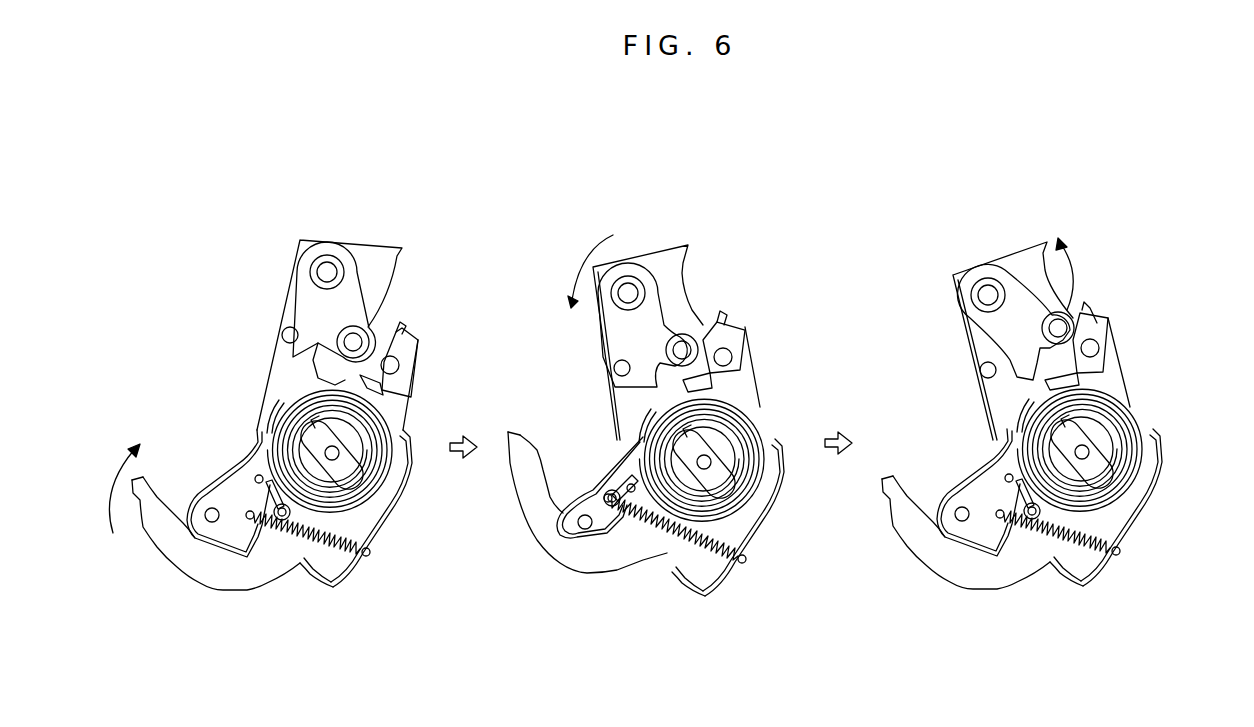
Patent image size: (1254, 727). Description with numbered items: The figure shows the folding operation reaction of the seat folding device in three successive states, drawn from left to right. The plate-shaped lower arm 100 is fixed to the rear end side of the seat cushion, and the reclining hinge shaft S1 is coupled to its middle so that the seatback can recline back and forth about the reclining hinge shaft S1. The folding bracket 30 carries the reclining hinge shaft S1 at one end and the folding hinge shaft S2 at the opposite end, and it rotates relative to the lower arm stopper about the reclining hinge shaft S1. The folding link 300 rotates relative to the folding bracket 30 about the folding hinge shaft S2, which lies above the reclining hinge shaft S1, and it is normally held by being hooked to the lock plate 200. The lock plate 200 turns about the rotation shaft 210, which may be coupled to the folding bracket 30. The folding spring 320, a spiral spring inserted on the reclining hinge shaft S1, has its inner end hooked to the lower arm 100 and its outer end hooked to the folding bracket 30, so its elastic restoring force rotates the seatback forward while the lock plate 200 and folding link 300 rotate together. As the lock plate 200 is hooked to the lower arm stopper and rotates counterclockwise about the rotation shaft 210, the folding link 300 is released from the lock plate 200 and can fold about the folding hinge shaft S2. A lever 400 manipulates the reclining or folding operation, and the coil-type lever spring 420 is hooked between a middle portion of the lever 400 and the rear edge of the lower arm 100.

The lower arm 100 is at (393, 487).
The lock plate 200 is at (377, 397).
The rotation shaft 210 is at (397, 341).
The folding bracket 30 is at (290, 372).
The folding link 300 is at (313, 308).
The folding spring 320 is at (277, 433).
The lever 400 is at (222, 577).
The lever spring 420 is at (330, 528).
The reclining hinge shaft S1 is at (336, 460).
The folding hinge shaft S2 is at (327, 270).